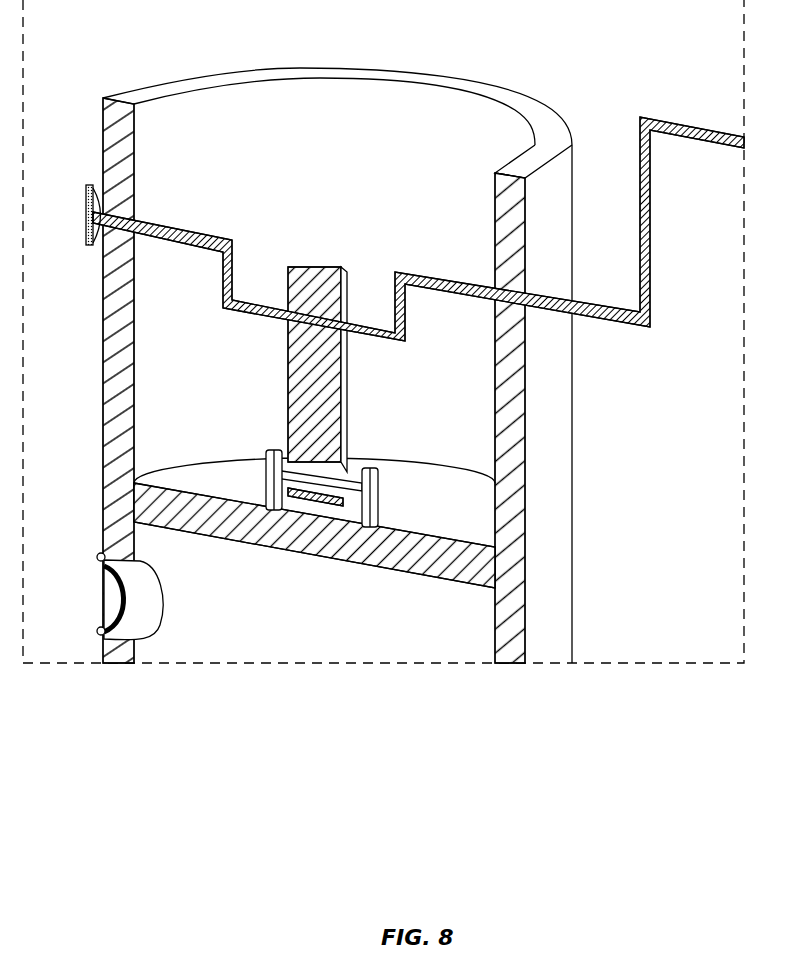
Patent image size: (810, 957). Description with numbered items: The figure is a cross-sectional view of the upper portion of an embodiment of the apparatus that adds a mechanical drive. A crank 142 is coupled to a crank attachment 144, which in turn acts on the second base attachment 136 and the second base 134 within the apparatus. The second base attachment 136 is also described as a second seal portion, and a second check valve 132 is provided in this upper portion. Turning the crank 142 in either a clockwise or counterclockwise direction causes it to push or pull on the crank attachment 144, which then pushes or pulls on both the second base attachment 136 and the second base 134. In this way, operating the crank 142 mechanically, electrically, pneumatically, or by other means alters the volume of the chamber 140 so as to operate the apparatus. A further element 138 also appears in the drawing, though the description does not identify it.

The second check valve 132 is at (98, 583).
The second base 134 is at (314, 523).
The second base attachment 136 is at (135, 90).
The bracket 138 is at (266, 455).
The chamber 140 is at (314, 626).
The crank 142 is at (398, 272).
The crank attachment 144 is at (288, 292).